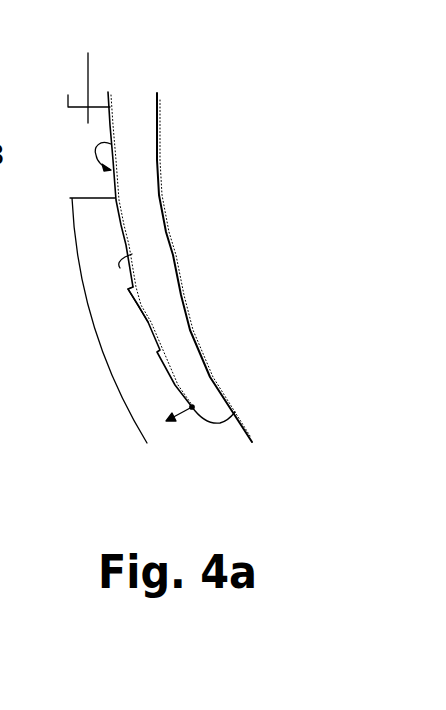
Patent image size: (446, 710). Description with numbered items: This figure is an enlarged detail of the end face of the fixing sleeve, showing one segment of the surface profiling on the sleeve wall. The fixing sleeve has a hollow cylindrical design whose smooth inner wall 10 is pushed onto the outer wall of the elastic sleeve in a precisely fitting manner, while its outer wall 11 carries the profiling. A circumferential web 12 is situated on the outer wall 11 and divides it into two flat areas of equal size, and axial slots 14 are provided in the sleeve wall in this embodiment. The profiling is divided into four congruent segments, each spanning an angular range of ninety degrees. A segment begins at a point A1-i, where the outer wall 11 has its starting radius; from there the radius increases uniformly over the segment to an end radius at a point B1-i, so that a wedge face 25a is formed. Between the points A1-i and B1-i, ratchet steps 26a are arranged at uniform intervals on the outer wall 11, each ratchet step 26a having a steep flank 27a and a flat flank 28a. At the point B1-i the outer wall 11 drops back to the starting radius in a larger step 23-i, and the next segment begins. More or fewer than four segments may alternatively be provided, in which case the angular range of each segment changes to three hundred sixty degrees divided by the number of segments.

The axial slot 14 is at (89, 70).
The smooth inner wall 10 is at (158, 169).
The outer wall 11 is at (111, 144).
The circumferential web 12 is at (142, 399).
The wedge face 25a is at (120, 223).
The ratchet step 26a is at (125, 240).
The flat flank 28a is at (120, 268).
The steep flank 27a is at (134, 289).
The larger step 23-i is at (228, 415).
The starting point of segment A1-i is at (192, 407).
The end point of segment B1-i is at (168, 421).